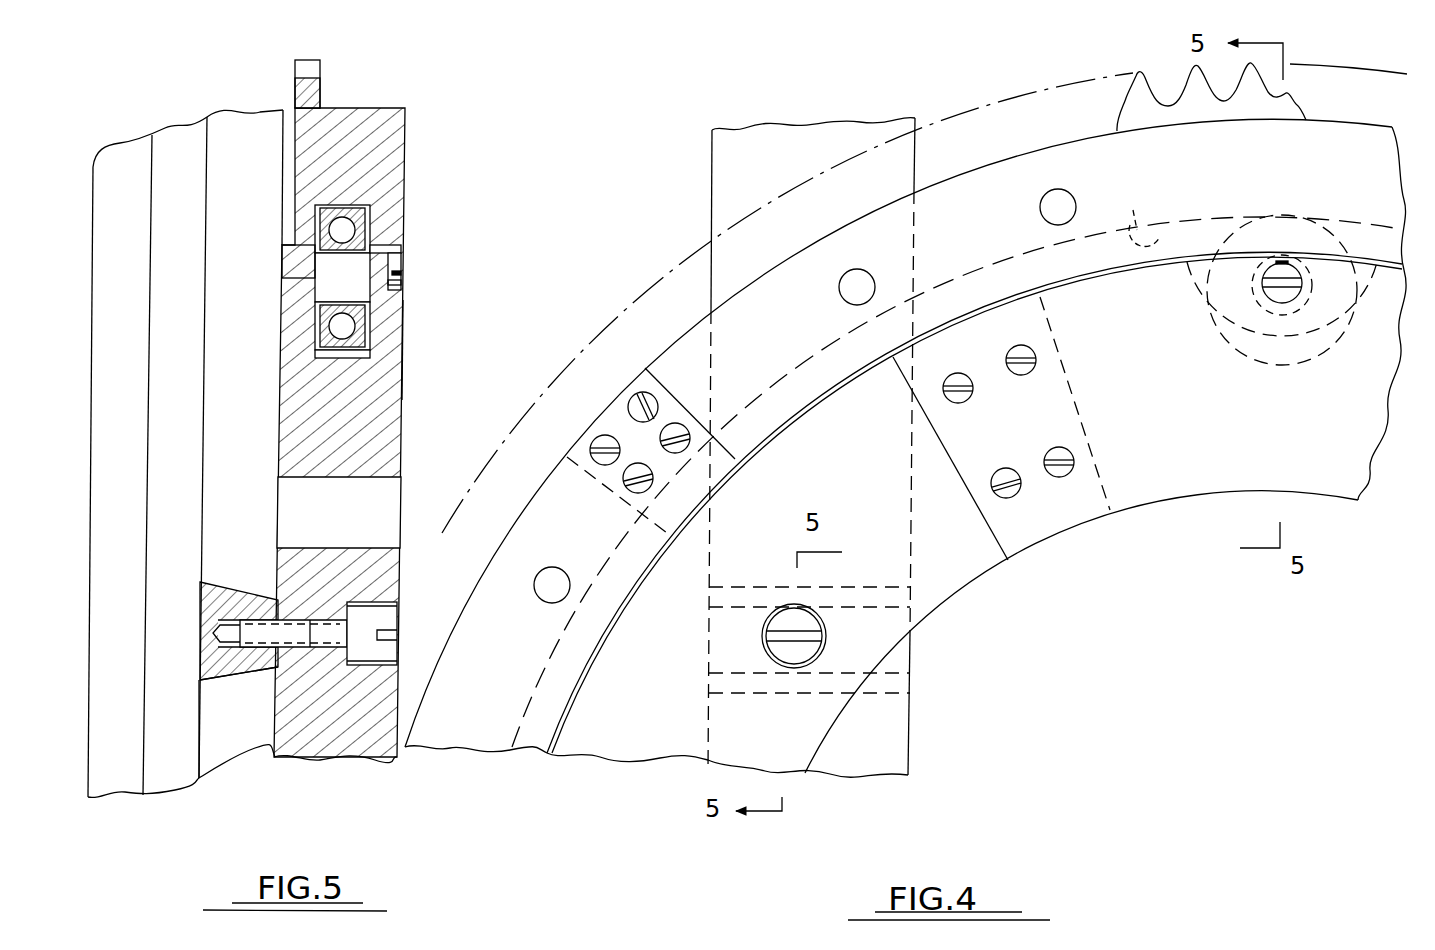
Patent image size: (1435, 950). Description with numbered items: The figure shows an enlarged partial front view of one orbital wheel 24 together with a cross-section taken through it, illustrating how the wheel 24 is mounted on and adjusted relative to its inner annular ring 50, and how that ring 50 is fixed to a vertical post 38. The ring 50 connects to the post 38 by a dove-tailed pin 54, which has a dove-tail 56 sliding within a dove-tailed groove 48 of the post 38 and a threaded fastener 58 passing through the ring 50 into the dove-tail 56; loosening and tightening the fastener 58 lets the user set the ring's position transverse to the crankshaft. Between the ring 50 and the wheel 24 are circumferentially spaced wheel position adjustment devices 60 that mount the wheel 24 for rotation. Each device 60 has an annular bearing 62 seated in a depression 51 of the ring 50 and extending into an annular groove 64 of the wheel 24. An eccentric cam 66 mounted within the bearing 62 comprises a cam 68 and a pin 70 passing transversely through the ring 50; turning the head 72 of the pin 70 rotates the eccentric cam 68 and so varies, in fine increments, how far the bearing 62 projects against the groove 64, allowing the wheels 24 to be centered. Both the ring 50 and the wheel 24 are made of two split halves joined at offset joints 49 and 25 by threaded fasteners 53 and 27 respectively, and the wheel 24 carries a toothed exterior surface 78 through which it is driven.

In FIG. 5, the orbital wheel 24 is at (400, 147).
In FIG. 4, the offset joint 25 is at (606, 414).
In FIG. 4, the threaded fasteners 27 is at (648, 422).
In FIG. 5, the vertical post 38 is at (177, 138).
In FIG. 4, the vertical post 38 is at (922, 741).
In FIG. 5, the dove-tailed groove 48 is at (225, 680).
In FIG. 4, the offset joint 49 is at (1057, 518).
In FIG. 5, the inner annular ring 50 is at (396, 330).
In FIG. 4, the inner annular ring 50 is at (1130, 500).
In FIG. 5, the depression 51 is at (362, 352).
In FIG. 4, the depression 51 is at (1273, 375).
In FIG. 4, the threaded fasteners 53 is at (1020, 375).
In FIG. 5, the dove-tailed pin 54 is at (318, 646).
In FIG. 5, the dove-tail 56 is at (213, 588).
In FIG. 5, the threaded fastener 58 is at (385, 612).
In FIG. 4, the threaded fastener 58 is at (808, 653).
In FIG. 5, the wheel position adjustment device 60 is at (390, 276).
In FIG. 5, the annular bearing 62 is at (347, 210).
In FIG. 4, the annular bearing 62 is at (1294, 236).
In FIG. 5, the annular groove 64 is at (327, 222).
In FIG. 4, the annular groove 64 is at (1140, 215).
In FIG. 5, the eccentric cam 66 is at (398, 286).
In FIG. 5, the cam 68 is at (325, 295).
In FIG. 4, the cam 68 is at (1275, 310).
In FIG. 5, the pin 70 is at (295, 268).
In FIG. 5, the head 72 is at (400, 262).
In FIG. 4, the head 72 is at (1268, 292).
In FIG. 5, the toothed exterior surface 78 is at (320, 97).
In FIG. 4, the toothed exterior surface 78 is at (1138, 98).